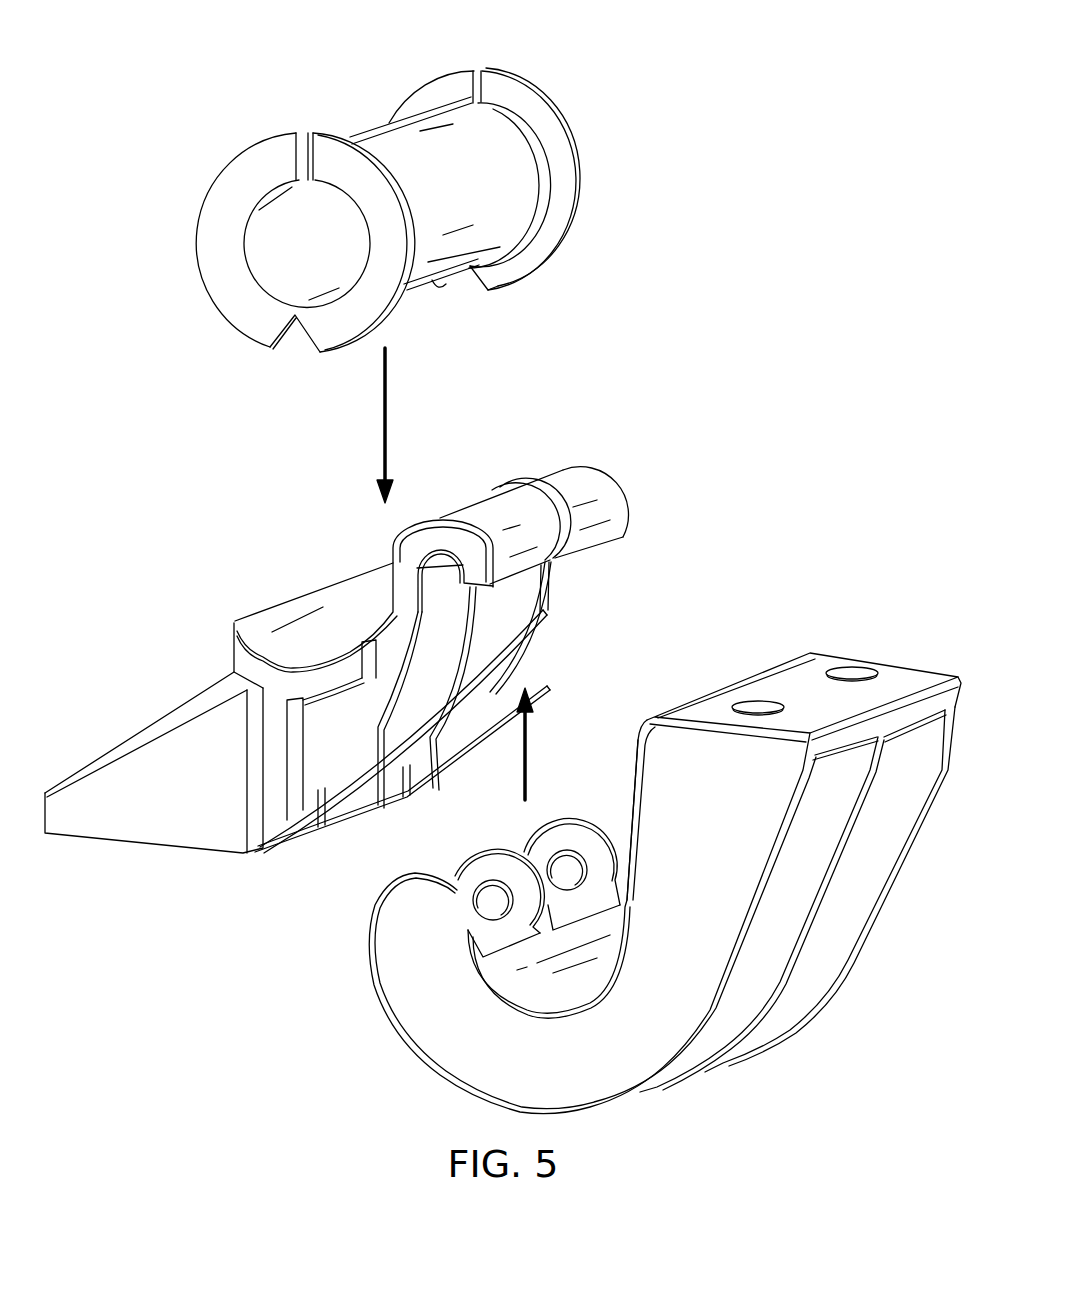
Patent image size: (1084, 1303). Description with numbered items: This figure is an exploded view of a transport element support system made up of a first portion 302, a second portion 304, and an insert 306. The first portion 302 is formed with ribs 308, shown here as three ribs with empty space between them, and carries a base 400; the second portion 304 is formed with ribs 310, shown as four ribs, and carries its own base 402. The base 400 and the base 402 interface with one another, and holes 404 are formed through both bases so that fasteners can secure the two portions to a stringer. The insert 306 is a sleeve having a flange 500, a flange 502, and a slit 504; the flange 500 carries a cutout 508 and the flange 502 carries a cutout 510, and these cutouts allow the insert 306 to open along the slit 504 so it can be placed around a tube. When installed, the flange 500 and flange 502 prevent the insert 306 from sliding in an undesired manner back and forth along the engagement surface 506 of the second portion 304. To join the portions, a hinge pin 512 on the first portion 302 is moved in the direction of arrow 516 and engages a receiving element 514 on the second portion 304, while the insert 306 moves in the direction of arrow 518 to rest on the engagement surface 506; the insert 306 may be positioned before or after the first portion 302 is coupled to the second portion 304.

The flange 500 is at (208, 238).
The flange 502 is at (508, 72).
The slit 504 is at (300, 168).
The insert 306 is at (510, 147).
The cutout 508 is at (288, 343).
The cutout 510 is at (463, 287).
The arrow 518 is at (383, 413).
The engagement surface 506 is at (327, 600).
The receiving element 514 is at (573, 477).
The second portion 304 is at (148, 725).
The base 402 is at (147, 830).
The ribs 310 is at (293, 855).
The arrow 516 is at (527, 757).
The base 400 is at (910, 677).
The holes 404 is at (847, 677).
The first portion 302 is at (422, 1037).
The hinge pin 512 is at (483, 847).
The ribs 308 is at (702, 1070).